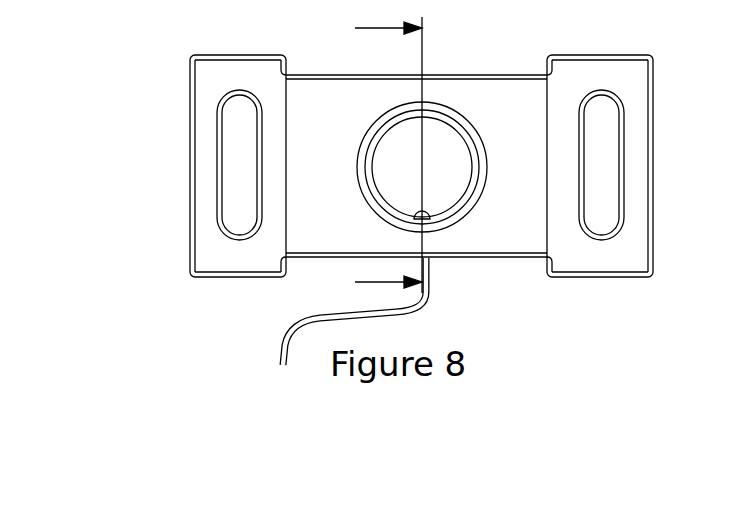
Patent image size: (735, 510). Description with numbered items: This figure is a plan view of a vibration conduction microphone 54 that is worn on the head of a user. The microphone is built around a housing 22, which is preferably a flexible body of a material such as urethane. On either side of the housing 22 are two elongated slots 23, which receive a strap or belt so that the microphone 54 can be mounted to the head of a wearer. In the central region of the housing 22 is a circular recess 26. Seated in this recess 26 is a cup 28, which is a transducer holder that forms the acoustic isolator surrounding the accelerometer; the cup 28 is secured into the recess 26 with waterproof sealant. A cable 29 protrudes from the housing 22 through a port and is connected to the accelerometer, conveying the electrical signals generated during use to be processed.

The vibration conduction microphone 54 is at (400, 184).
The housing 22 is at (508, 73).
The slots 23 is at (240, 155).
The recess 26 is at (465, 122).
The cup 28 is at (443, 193).
The cable 29 is at (283, 323).